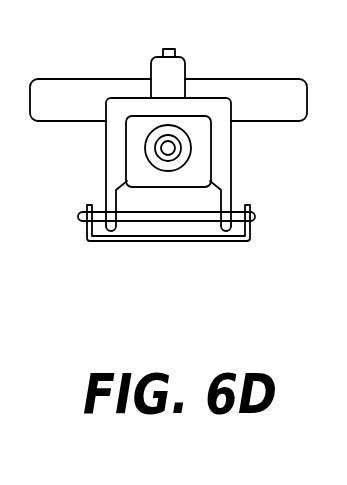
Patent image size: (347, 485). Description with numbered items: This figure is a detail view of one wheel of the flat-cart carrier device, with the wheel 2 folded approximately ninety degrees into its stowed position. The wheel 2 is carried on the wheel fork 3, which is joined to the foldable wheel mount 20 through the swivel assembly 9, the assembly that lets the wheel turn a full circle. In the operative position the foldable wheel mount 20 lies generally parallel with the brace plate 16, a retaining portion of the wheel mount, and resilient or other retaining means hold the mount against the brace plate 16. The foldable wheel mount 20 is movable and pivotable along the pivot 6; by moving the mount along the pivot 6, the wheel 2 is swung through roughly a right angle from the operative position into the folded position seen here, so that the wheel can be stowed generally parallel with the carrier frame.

The wheel 2 is at (283, 88).
The wheel fork 3 is at (173, 73).
The pivot 6 is at (85, 213).
The 360° swivel assembly 9 is at (191, 140).
The brace plate 16 is at (250, 233).
The foldable wheel mount 20 is at (108, 148).